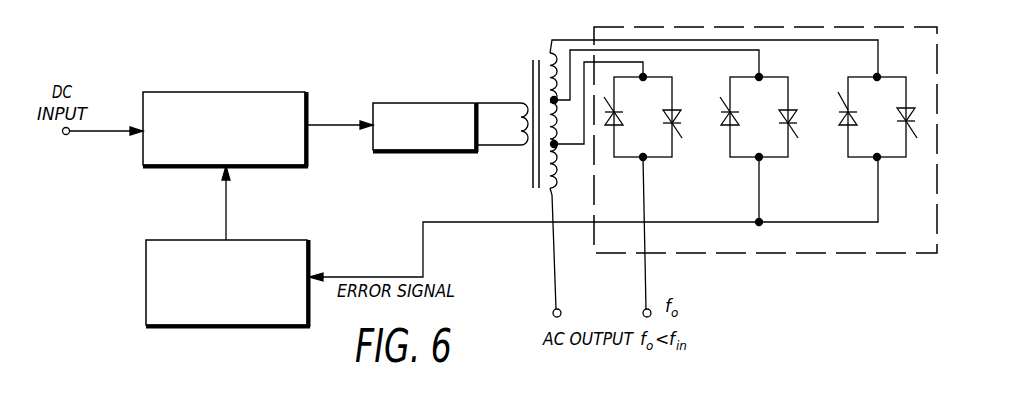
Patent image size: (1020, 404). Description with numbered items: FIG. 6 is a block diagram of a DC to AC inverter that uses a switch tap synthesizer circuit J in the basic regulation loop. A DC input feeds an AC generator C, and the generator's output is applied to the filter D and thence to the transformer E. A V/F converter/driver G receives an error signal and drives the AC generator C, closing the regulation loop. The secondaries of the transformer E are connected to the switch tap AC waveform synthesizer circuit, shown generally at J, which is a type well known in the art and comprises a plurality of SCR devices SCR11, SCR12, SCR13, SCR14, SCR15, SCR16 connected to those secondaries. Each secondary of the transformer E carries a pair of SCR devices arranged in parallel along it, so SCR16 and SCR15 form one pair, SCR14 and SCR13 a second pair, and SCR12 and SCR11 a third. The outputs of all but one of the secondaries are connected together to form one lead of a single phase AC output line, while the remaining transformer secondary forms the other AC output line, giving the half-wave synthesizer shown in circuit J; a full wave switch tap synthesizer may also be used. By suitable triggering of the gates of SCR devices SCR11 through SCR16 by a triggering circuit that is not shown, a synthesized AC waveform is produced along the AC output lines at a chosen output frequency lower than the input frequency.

The AC generator C is at (231, 70).
The filter D is at (428, 103).
The transformer E is at (532, 68).
The V/F converter/driver G is at (261, 217).
The switch tap synthesizer circuit J is at (594, 253).
The SCR device SCR11 is at (897, 113).
The SCR device SCR12 is at (852, 116).
The SCR device SCR13 is at (791, 125).
The SCR device SCR14 is at (754, 104).
The SCR device SCR15 is at (676, 124).
The SCR device SCR16 is at (638, 107).